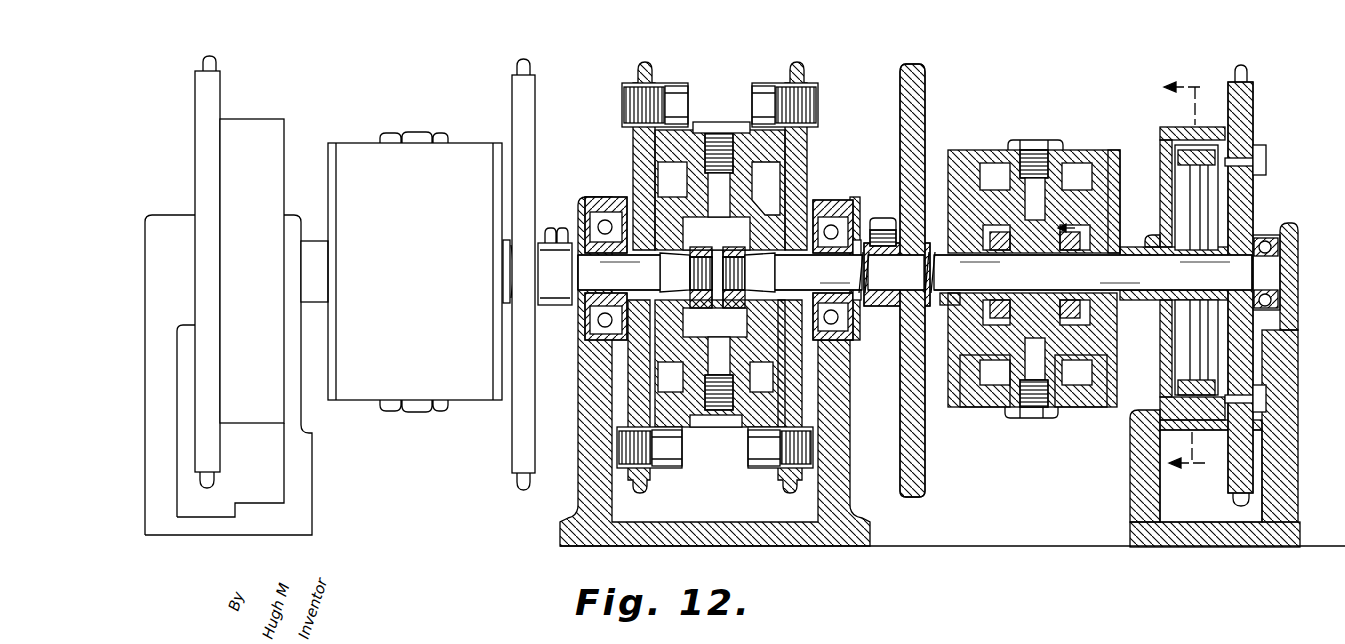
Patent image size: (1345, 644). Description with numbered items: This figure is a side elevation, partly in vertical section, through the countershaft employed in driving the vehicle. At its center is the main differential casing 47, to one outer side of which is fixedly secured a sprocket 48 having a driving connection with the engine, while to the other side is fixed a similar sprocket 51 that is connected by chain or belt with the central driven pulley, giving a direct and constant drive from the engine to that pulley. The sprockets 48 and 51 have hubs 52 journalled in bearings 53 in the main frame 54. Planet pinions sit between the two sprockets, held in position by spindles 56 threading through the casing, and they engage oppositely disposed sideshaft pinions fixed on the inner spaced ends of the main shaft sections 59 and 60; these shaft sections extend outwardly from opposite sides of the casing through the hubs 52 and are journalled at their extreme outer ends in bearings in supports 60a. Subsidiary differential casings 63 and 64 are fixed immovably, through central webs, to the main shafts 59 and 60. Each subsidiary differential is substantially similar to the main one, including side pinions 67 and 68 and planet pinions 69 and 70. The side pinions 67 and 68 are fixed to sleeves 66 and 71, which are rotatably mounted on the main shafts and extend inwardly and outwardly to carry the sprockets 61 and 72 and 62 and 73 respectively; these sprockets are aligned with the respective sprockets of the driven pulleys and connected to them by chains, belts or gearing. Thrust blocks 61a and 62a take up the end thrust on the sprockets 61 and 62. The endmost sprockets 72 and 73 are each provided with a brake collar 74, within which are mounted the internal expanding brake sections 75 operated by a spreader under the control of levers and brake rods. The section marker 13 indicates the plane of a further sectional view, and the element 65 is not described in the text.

The section line 13- 13 is at (1173, 281).
The main differential casing 47 is at (750, 134).
The sprocket 48 is at (648, 78).
The sprocket 51 is at (811, 168).
The hubs 52 is at (858, 240).
The bearings 53 is at (835, 212).
The main frame 54 is at (578, 403).
The spindles 56 is at (717, 134).
The main shaft section 59 is at (675, 272).
The main shaft section 60 is at (915, 277).
The supports 60a is at (312, 478).
The sprocket 61 is at (537, 125).
The thrust block 61a is at (568, 242).
The sprocket 62 is at (930, 92).
The thrust block 62a is at (867, 307).
The subsidiary differential casing 63 is at (366, 141).
The subsidiary differential casing 64 is at (1118, 150).
The motor shaft coupling 65 is at (505, 275).
The sleeve 66 is at (946, 301).
The side pinion 67 is at (973, 378).
The side pinion 68 is at (1121, 188).
The planet pinion 69 is at (1067, 180).
The planet pinion 70 is at (1070, 378).
The sleeve 71 is at (305, 241).
The sprocket 72 is at (222, 84).
The sprocket 73 is at (1256, 114).
The brake collar 74 is at (272, 120).
The internal expanding brake sections 75 is at (1200, 188).